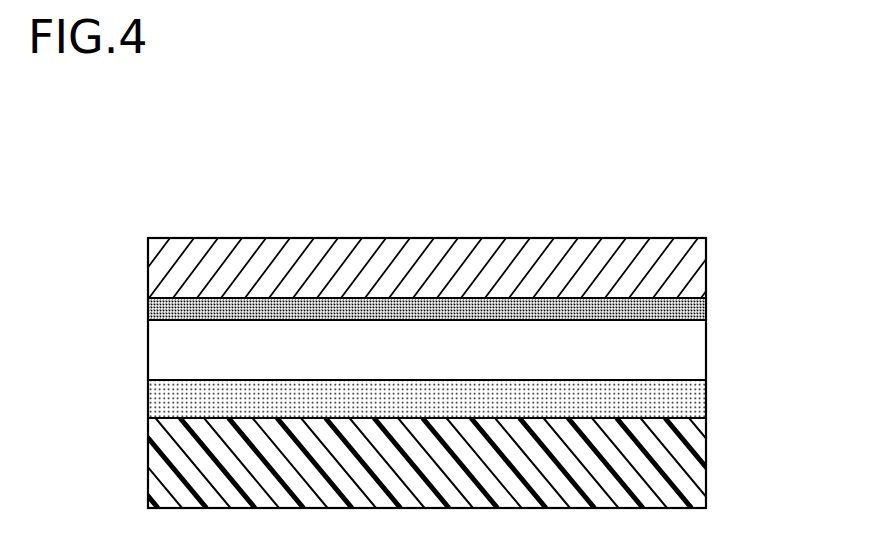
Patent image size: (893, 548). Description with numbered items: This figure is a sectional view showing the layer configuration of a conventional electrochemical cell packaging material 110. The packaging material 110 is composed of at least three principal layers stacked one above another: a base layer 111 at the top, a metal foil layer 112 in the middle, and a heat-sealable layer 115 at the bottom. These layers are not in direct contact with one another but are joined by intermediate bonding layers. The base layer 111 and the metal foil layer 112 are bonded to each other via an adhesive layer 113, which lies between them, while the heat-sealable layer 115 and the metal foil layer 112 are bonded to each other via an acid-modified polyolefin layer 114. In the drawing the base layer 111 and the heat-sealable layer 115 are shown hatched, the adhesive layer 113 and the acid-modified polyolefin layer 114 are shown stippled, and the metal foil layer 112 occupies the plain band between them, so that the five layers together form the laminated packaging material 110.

The conventional electrochemical cell packaging material 110 is at (670, 210).
The base layer 111 is at (706, 252).
The metal foil layer 112 is at (675, 348).
The adhesive layer 113 is at (706, 313).
The acid-modified polyolefin layer 114 is at (706, 413).
The heat-sealable layer 115 is at (673, 465).